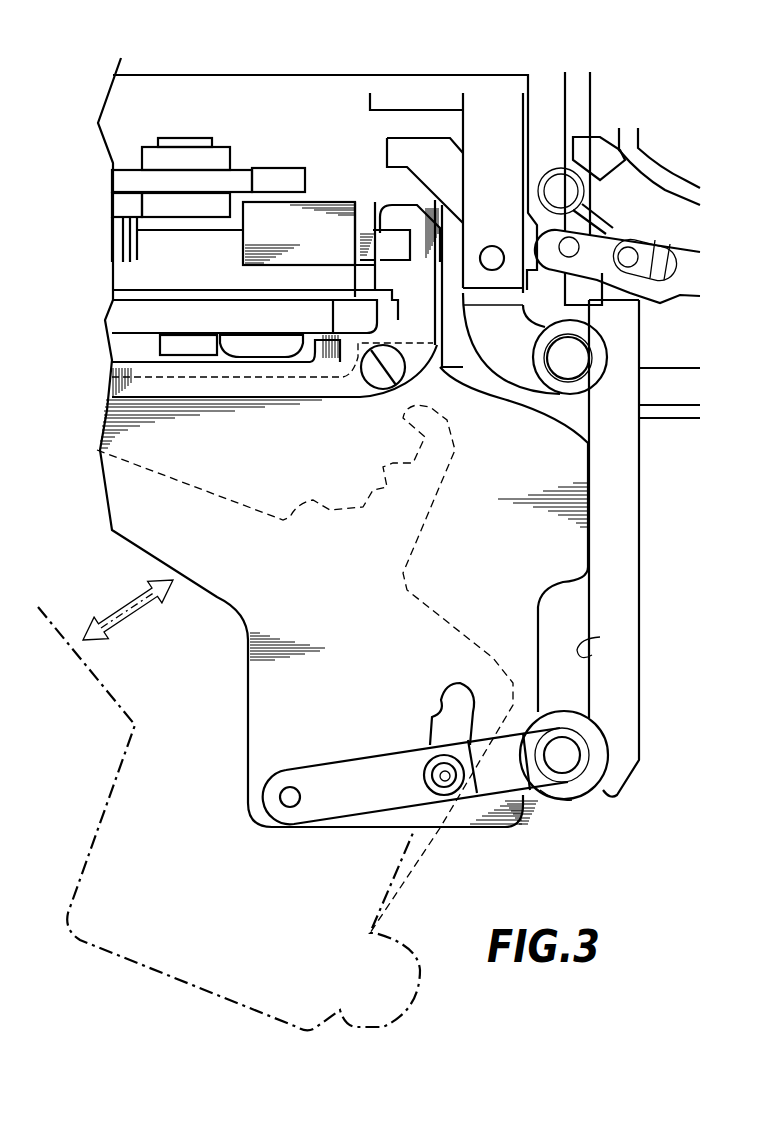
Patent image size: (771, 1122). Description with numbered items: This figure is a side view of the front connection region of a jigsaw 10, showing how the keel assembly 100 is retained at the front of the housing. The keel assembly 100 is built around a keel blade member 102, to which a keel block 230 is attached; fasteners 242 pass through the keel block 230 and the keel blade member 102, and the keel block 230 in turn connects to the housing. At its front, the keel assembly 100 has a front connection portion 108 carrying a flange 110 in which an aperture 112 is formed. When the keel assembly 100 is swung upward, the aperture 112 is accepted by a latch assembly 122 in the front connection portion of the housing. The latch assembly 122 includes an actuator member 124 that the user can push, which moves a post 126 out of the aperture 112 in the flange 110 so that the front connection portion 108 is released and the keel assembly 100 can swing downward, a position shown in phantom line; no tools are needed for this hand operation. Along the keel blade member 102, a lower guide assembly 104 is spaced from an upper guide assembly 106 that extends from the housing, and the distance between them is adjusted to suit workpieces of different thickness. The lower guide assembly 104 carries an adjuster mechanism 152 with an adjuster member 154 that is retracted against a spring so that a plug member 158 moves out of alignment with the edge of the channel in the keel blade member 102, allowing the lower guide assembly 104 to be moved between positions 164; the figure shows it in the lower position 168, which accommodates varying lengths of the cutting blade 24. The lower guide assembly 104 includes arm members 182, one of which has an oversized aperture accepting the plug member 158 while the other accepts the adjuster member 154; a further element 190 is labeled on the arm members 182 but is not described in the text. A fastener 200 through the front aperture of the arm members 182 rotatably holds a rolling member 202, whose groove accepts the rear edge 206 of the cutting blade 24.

The jigsaw 10 is at (650, 58).
The cutting blade 24 is at (630, 535).
The keel assembly 100 is at (123, 557).
The keel blade member 102 is at (329, 475).
The lower guide assembly 104 is at (572, 826).
The upper guide assembly 106 is at (520, 387).
The front connection portion 108 is at (445, 497).
The flange 110 is at (438, 247).
The aperture 112 is at (418, 224).
The latch assembly 122 is at (337, 281).
The actuator member 124 is at (311, 245).
The post 126 is at (361, 233).
The adjuster mechanism 152 is at (450, 783).
The adjuster member 154 is at (422, 756).
The plug member 158 is at (430, 787).
The positions 164 is at (431, 843).
The lower position 168 is at (600, 808).
The arm members 182 is at (338, 794).
The pivot pin 190 is at (275, 812).
The fastener 200 is at (567, 755).
The rolling member 202 is at (573, 720).
The rear edge 206 is at (600, 637).
The keel block 230 is at (117, 367).
The fasteners 242 is at (374, 373).